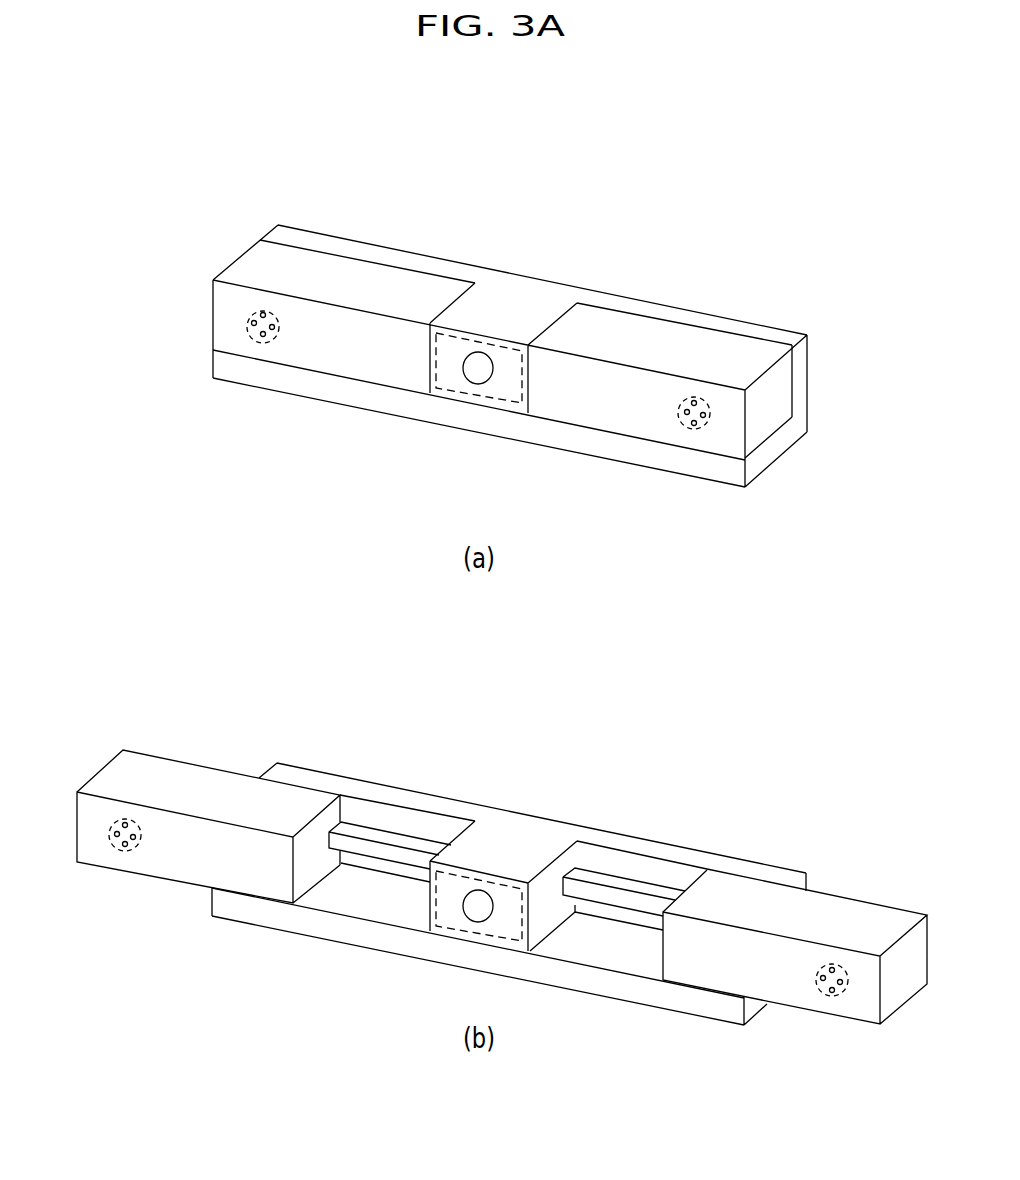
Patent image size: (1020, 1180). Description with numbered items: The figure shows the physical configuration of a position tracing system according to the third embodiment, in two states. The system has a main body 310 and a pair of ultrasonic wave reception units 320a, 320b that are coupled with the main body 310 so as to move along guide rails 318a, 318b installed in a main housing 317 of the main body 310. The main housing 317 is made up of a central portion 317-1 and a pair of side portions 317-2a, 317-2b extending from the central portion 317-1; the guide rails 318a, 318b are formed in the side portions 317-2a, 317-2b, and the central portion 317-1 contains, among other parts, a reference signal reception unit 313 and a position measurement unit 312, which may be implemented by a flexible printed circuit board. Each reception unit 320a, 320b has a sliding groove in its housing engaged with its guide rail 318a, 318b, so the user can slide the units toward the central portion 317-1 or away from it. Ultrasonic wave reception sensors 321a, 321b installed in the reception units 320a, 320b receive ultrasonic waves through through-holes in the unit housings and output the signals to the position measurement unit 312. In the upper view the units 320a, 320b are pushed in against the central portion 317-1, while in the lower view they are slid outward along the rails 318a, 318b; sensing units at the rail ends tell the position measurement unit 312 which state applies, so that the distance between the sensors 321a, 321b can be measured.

The main body 310 is at (483, 308).
The position measurement unit 312 is at (465, 337).
The reference signal reception unit 313 is at (478, 352).
The main housing 317 is at (641, 520).
The central portion 317-1 is at (525, 450).
The side portion 317-2a is at (429, 429).
The side portion 317-2b is at (744, 490).
The guide rail 318a is at (388, 848).
The guide rail 318b is at (643, 902).
The ultrasonic wave reception unit 320a is at (268, 280).
The ultrasonic wave reception unit 320b is at (695, 354).
The ultrasonic wave reception sensor 321a is at (247, 324).
The ultrasonic wave reception sensor 321b is at (711, 411).